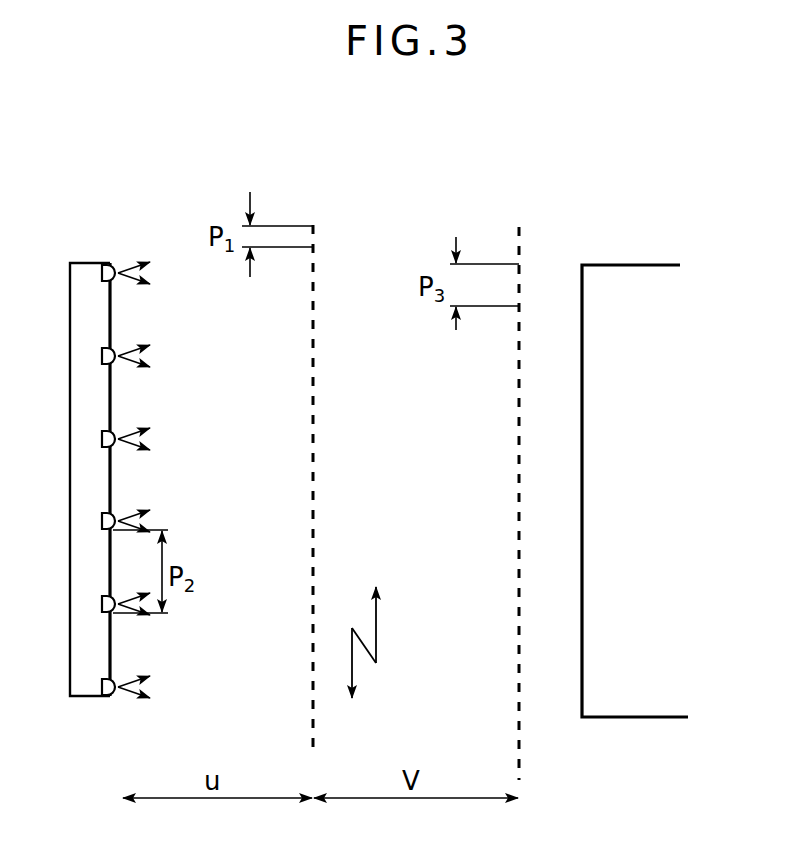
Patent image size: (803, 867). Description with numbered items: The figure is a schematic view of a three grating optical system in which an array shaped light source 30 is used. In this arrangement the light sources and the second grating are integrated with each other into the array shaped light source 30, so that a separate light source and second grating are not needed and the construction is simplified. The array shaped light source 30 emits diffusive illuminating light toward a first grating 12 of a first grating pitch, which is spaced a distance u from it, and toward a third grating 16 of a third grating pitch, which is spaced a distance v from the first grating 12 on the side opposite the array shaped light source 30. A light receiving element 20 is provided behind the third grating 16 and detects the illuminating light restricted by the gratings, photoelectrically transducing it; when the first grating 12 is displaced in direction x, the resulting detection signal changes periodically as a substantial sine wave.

The first grating 12 is at (313, 222).
The third grating 16 is at (519, 225).
The light receiving element 20 is at (635, 265).
The array shaped light source 30 is at (70, 495).